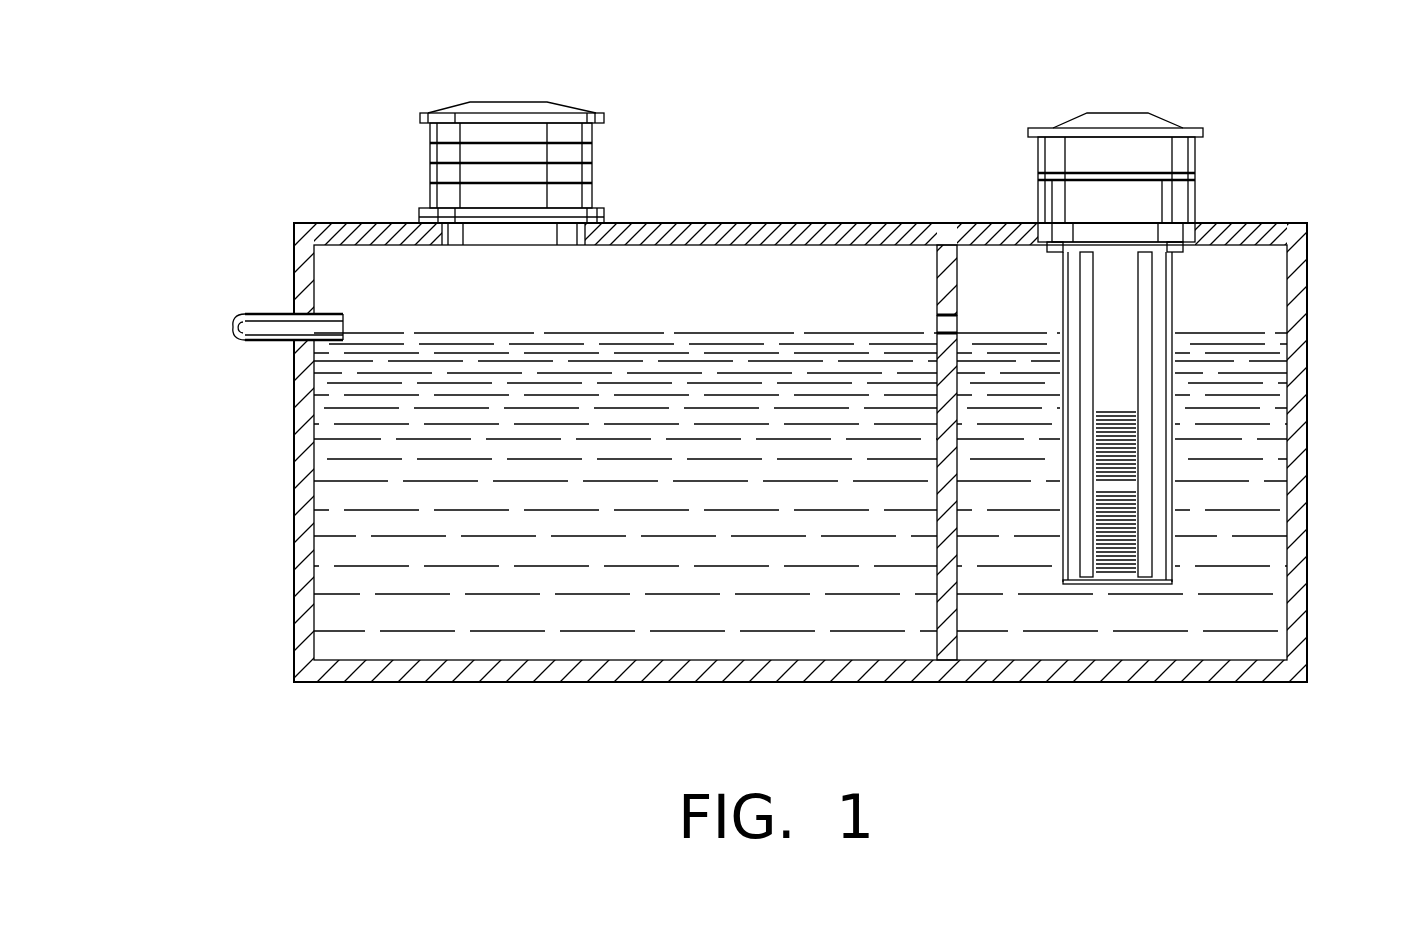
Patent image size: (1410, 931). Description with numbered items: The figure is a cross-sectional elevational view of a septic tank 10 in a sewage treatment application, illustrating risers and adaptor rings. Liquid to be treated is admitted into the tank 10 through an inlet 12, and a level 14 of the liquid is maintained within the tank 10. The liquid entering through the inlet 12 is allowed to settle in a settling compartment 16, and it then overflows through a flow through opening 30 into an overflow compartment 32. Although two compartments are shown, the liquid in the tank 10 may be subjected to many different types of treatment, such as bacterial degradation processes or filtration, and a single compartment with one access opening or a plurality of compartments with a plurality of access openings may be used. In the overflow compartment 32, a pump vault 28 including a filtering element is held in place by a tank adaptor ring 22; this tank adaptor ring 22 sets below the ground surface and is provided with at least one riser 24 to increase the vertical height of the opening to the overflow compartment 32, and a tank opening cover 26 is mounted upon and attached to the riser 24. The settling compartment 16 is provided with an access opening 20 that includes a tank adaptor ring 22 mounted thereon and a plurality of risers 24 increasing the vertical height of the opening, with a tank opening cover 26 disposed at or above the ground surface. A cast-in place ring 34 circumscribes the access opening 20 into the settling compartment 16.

The septic tank 10 is at (238, 530).
The inlet 12 is at (257, 313).
The level 14 is at (390, 333).
The settling compartment 16 is at (733, 277).
The access opening 20 is at (468, 246).
The tank adaptor ring 22 is at (607, 212).
The riser 24 is at (590, 195).
The tank opening cover 26 is at (555, 110).
The pump vault 28 is at (1167, 273).
The flow through opening 30 is at (937, 317).
The overflow compartment 32 is at (1263, 317).
The cast-in place ring 34 is at (415, 232).